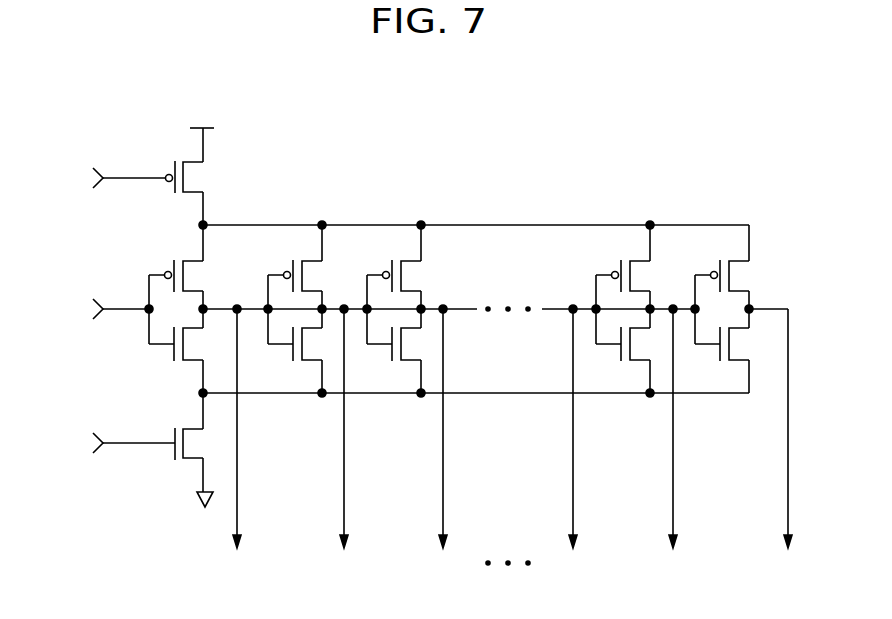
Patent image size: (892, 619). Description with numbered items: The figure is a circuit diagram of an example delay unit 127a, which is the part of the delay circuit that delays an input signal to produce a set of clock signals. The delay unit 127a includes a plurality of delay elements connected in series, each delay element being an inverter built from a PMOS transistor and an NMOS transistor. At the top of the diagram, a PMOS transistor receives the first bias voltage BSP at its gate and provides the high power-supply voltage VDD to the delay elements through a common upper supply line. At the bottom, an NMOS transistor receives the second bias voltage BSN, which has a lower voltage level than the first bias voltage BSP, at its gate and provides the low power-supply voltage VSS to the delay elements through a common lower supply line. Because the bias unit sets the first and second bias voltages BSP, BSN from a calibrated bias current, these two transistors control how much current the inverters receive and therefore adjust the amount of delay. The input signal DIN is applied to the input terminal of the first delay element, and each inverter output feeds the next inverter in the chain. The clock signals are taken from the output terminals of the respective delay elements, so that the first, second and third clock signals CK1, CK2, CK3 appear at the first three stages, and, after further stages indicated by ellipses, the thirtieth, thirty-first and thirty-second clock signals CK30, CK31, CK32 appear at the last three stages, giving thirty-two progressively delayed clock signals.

The delay unit 127a is at (490, 96).
The high power-supply voltage VDD is at (202, 134).
The low power-supply voltage VSS is at (206, 499).
The first bias voltage BSP is at (109, 178).
The second bias voltage BSN is at (115, 443).
The input signal DIN is at (101, 311).
The clock signal CK1 is at (238, 441).
The clock signal CK2 is at (344, 441).
The clock signal CK3 is at (444, 441).
The clock signal CK30 is at (574, 441).
The clock signal CK31 is at (674, 441).
The clock signal CK32 is at (780, 443).